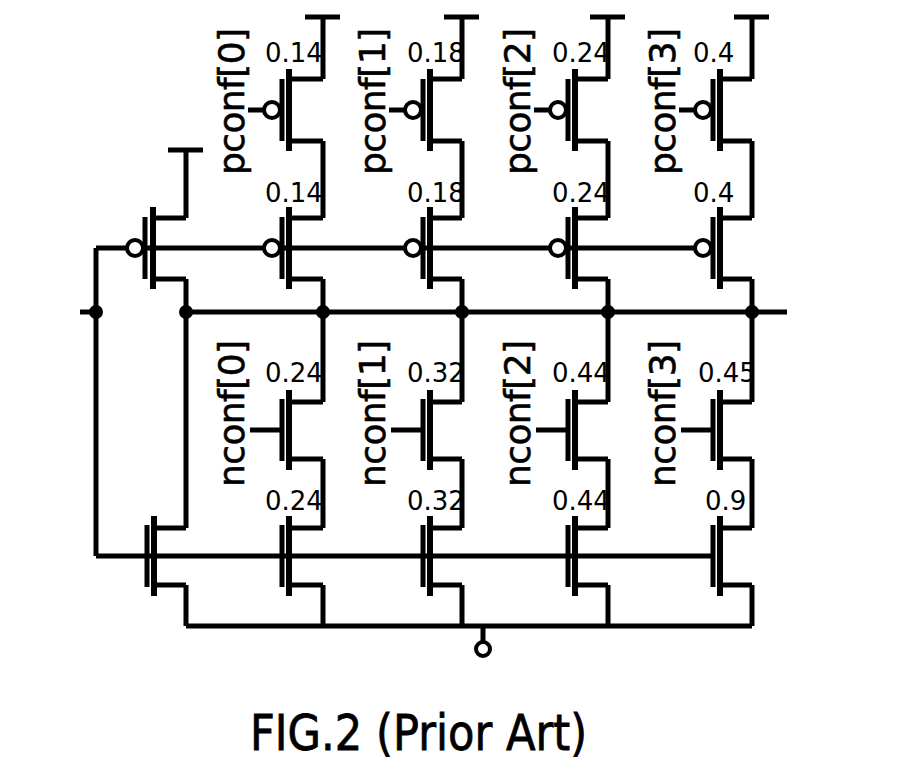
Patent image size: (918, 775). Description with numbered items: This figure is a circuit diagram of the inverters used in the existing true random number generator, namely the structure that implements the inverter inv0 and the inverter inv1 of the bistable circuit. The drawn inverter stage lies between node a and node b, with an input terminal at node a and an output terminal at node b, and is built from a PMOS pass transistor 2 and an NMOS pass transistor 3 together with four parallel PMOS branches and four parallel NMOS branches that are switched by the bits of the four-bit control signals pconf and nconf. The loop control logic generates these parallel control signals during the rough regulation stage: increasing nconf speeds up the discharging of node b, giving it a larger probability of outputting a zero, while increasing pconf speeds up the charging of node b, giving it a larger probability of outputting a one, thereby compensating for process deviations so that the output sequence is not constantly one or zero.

The PMOS pass transistor 2 is at (165, 231).
The NMOS pass transistor 3 is at (166, 469).
The node a is at (68, 308).
The node b is at (788, 311).